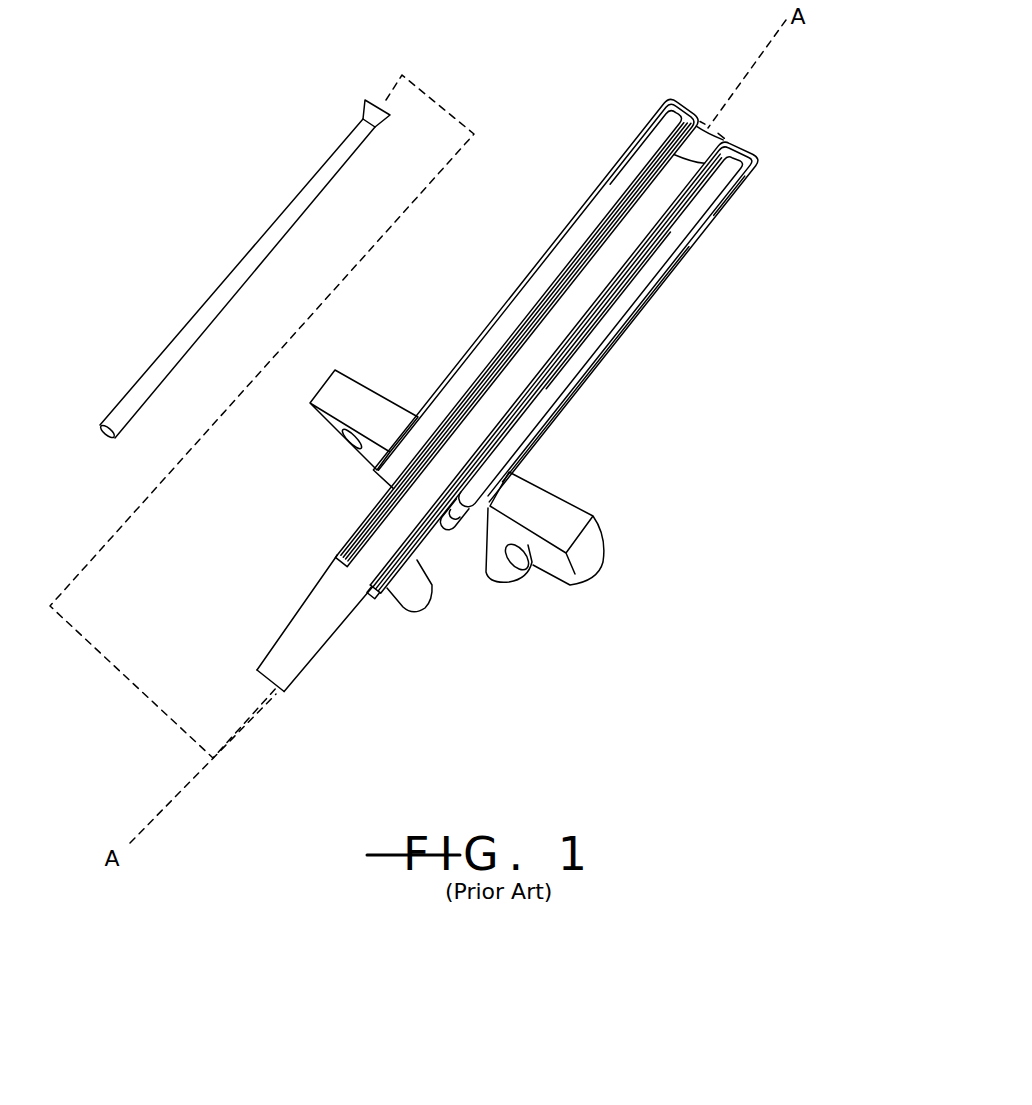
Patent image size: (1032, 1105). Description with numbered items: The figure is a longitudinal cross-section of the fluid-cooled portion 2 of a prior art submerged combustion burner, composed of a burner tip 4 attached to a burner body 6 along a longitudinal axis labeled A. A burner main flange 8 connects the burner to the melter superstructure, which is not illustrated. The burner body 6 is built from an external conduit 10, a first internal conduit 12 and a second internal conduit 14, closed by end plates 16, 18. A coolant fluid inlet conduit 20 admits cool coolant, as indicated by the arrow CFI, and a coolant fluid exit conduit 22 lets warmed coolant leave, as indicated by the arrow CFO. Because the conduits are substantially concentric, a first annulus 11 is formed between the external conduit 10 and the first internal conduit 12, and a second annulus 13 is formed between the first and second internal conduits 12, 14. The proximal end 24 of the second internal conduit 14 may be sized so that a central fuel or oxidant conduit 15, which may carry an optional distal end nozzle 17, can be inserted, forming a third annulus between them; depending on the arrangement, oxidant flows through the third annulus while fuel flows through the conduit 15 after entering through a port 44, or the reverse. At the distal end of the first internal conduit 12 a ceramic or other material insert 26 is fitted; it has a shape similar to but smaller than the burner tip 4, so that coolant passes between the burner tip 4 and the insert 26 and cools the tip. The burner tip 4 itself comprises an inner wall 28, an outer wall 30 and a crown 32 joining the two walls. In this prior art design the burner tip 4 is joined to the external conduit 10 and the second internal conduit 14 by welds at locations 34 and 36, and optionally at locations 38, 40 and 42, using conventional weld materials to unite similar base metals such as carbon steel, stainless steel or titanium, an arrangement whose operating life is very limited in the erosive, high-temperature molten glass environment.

The fluid-cooled portion 2 is at (718, 332).
The burner tip 4 is at (750, 172).
The burner body 6 is at (618, 338).
The burner main flange 8 is at (575, 497).
The external conduit 10 is at (566, 403).
The first annulus 11 is at (487, 350).
The first internal conduit 12 is at (660, 250).
The second annulus 13 is at (460, 403).
The second internal conduit 14 is at (622, 278).
The fuel or oxidant conduit 15 is at (232, 265).
The end plate 16 is at (445, 525).
The distal end nozzle 17 is at (365, 110).
The end plate 18 is at (377, 592).
The coolant fluid inlet conduit 20 is at (497, 580).
The coolant fluid exit conduit 22 is at (412, 603).
The proximal end 24 is at (288, 629).
The insert 26 is at (730, 150).
The inner wall 28 is at (712, 117).
The outer wall 30 is at (742, 185).
The crown 32 is at (747, 153).
The weld location 34 is at (629, 150).
The weld location 36 is at (630, 207).
The optional weld location 38 is at (562, 330).
The optional weld location 40 is at (651, 115).
The optional weld location 42 is at (705, 125).
The port 44 is at (279, 697).
The coolant fluid outlet arrow CFO is at (430, 613).
The coolant fluid inlet arrow CFI is at (515, 590).